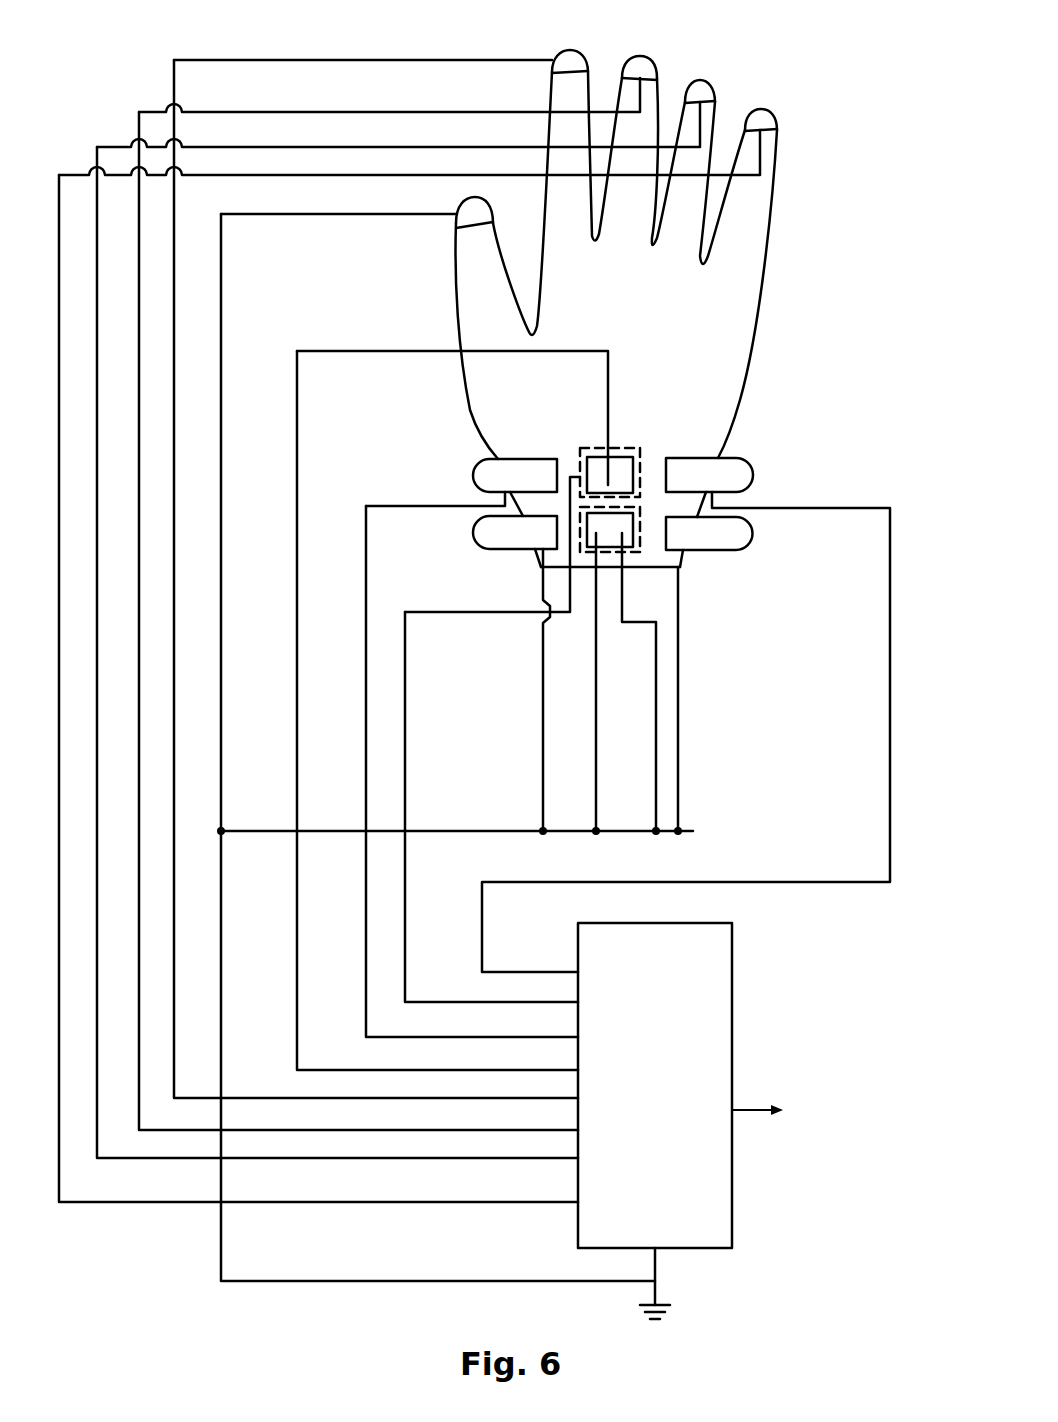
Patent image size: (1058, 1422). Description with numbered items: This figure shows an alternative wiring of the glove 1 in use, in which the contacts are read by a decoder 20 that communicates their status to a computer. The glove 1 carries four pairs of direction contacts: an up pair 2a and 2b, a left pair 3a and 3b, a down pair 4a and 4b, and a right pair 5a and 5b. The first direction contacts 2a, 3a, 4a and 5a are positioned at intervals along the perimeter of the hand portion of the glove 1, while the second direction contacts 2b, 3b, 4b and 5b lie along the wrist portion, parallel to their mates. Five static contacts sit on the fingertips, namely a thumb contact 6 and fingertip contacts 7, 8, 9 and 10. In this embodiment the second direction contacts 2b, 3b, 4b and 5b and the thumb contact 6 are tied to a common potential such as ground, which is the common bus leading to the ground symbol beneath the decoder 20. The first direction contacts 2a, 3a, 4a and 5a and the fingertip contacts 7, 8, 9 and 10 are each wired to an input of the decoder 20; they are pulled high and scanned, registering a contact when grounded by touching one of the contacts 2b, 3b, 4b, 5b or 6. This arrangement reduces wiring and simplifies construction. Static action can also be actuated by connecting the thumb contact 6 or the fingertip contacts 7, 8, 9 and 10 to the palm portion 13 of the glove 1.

The glove 1 is at (766, 334).
The palm portion 13 is at (656, 334).
The thumb contact 6 is at (472, 206).
The fingertip contact 7 is at (575, 62).
The fingertip contact 8 is at (642, 68).
The fingertip contact 9 is at (708, 95).
The fingertip contact 10 is at (770, 122).
The first up direction contact 2a is at (473, 478).
The second up direction contact 2b is at (473, 537).
The first down direction contact 4a is at (753, 480).
The second down direction contact 4b is at (753, 536).
The first left direction contact 3a is at (603, 452).
The second left direction contact 3b is at (605, 553).
The first right direction contact 5a is at (620, 470).
The second right direction contact 5b is at (623, 553).
The decoder 20 is at (725, 960).